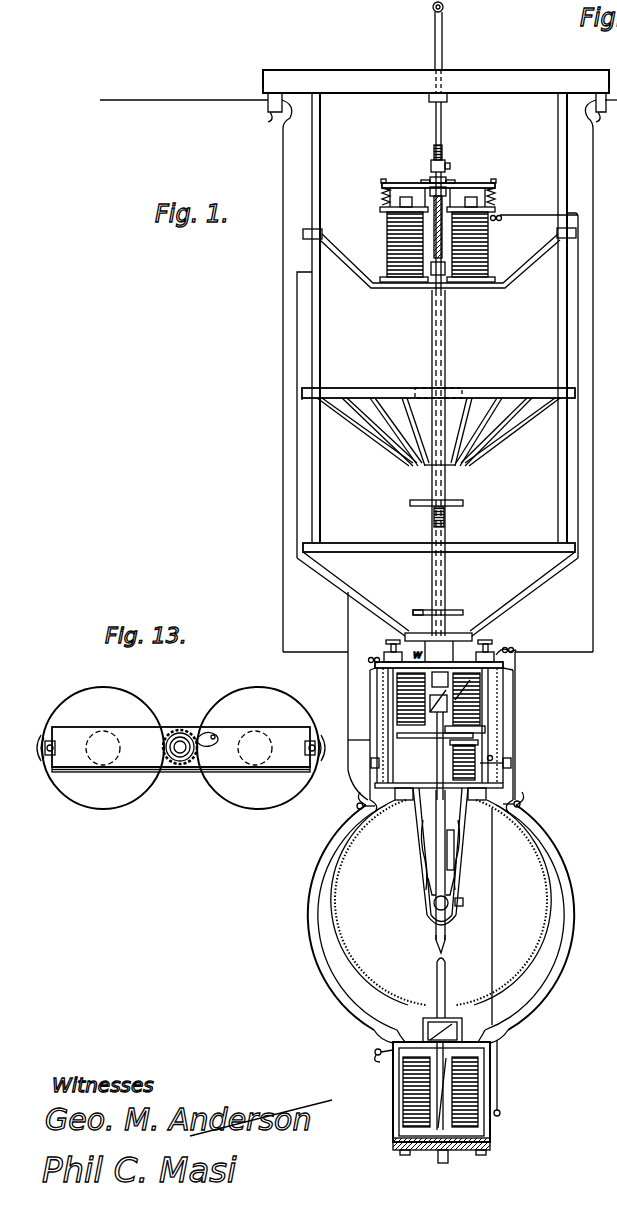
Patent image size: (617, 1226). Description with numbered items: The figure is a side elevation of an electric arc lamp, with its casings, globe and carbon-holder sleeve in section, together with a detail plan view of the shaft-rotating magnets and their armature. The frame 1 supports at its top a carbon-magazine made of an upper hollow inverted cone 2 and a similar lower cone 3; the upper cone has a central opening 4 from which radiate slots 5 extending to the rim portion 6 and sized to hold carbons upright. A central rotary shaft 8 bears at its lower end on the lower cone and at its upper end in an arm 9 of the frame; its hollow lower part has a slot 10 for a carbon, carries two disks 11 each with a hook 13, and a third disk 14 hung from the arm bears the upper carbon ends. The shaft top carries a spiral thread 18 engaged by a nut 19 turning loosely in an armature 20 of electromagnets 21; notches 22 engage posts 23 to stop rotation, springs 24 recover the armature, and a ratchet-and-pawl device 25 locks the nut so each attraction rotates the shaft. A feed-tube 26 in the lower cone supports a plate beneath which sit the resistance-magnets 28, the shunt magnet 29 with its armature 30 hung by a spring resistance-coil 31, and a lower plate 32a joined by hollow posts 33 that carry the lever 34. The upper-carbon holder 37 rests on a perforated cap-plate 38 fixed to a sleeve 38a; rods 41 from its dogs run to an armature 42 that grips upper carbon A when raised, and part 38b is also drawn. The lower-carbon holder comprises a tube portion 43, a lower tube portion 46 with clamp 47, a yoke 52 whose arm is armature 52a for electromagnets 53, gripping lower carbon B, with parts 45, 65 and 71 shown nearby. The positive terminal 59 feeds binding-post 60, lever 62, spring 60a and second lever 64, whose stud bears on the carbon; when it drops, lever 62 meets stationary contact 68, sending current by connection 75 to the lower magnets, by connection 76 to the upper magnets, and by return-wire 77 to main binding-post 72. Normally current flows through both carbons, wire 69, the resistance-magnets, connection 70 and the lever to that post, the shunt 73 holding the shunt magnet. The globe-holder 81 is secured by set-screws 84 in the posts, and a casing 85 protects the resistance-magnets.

In FIG. 1, the frame 1 is at (312, 186).
In FIG. 1, the upper hollow inverted cone 2 is at (493, 399).
In FIG. 1, the lower cone 3 is at (437, 602).
In FIG. 1, the central opening 4 is at (427, 466).
In FIG. 1, the slots 5 is at (407, 413).
In FIG. 1, the rim portion 6 is at (372, 385).
In FIG. 1, the central rotary shaft 8 is at (437, 147).
In FIG. 13, the central rotary shaft 8 is at (183, 738).
In FIG. 1, the arm 9 is at (506, 283).
In FIG. 1, the vertical opening or slot 10 is at (447, 523).
In FIG. 1, the disks 11 is at (413, 507).
In FIG. 1, the hook 13 is at (447, 500).
In FIG. 1, the third disk 14 is at (455, 389).
In FIG. 1, the spiral thread 18 is at (445, 166).
In FIG. 1, the nut 19 is at (505, 668).
In FIG. 1, the armature 20 is at (482, 188).
In FIG. 13, the armature 20 is at (181, 747).
In FIG. 1, the electromagnets 21 is at (387, 244).
In FIG. 13, the electromagnets 21 is at (180, 748).
In FIG. 13, the notches 22 is at (181, 780).
In FIG. 1, the posts 23 is at (383, 184).
In FIG. 13, the posts 23 is at (50, 727).
In FIG. 1, the springs 24 is at (382, 199).
In FIG. 13, the springs 24 is at (315, 747).
In FIG. 1, the ratchet-and-pawl device 25 is at (447, 186).
In FIG. 13, the ratchet-and-pawl device 25 is at (183, 768).
In FIG. 1, the feed-tube 26 is at (458, 660).
In FIG. 1, the resistance-magnets 28 is at (425, 697).
In FIG. 1, the magnet 29 is at (503, 759).
In FIG. 1, the armature 30 is at (505, 735).
In FIG. 1, the spring resistance-coil 31 is at (371, 763).
In FIG. 1, the lower plate 32a is at (375, 786).
In FIG. 1, the hollow posts 33 is at (377, 714).
In FIG. 1, the lever 34 is at (500, 705).
In FIG. 1, the holder and clamp for upper carbon 37 is at (449, 892).
In FIG. 1, the perforated cap-plate 38 is at (457, 916).
In FIG. 1, the sleeve 38a is at (503, 786).
In FIG. 1, the clamp screw 38b is at (463, 903).
In FIG. 1, the rods 41 is at (456, 847).
In FIG. 1, the armature 42 is at (435, 741).
In FIG. 1, the upper short tube portion 43 is at (456, 1022).
In FIG. 1, the lower magnet casing 45 is at (491, 1068).
In FIG. 1, the lower tube portion 46 is at (493, 1030).
In FIG. 1, the clamp 47 is at (418, 1024).
In FIG. 1, the yoke 52 is at (500, 1114).
In FIG. 1, the armature 52a is at (405, 1152).
In FIG. 1, the electromagnets 53 is at (402, 1090).
In FIG. 1, the positive terminal 59 is at (390, 652).
In FIG. 1, the binding-post 60 is at (413, 612).
In FIG. 1, the spring 60a is at (455, 856).
In FIG. 1, the lever 62 is at (458, 834).
In FIG. 1, the second lever 64 is at (458, 877).
In FIG. 1, the clip 65 is at (520, 804).
In FIG. 1, the stationary contact 68 is at (357, 807).
In FIG. 1, the wire 69 is at (572, 907).
In FIG. 1, the connection 70 is at (372, 740).
In FIG. 1, the casing 71 is at (514, 691).
In FIG. 1, the main binding-post 72 is at (516, 650).
In FIG. 1, the shunt 73 is at (453, 765).
In FIG. 1, the connection 75 is at (493, 934).
In FIG. 1, the connection 76 is at (348, 618).
In FIG. 1, the return-wire 77 is at (580, 461).
In FIG. 1, the globe-holder 81 is at (332, 846).
In FIG. 1, the set-screws 84 is at (511, 766).
In FIG. 1, the casing 85 is at (377, 678).
In FIG. 1, the upper carbon A is at (447, 943).
In FIG. 1, the lower carbon B is at (446, 971).